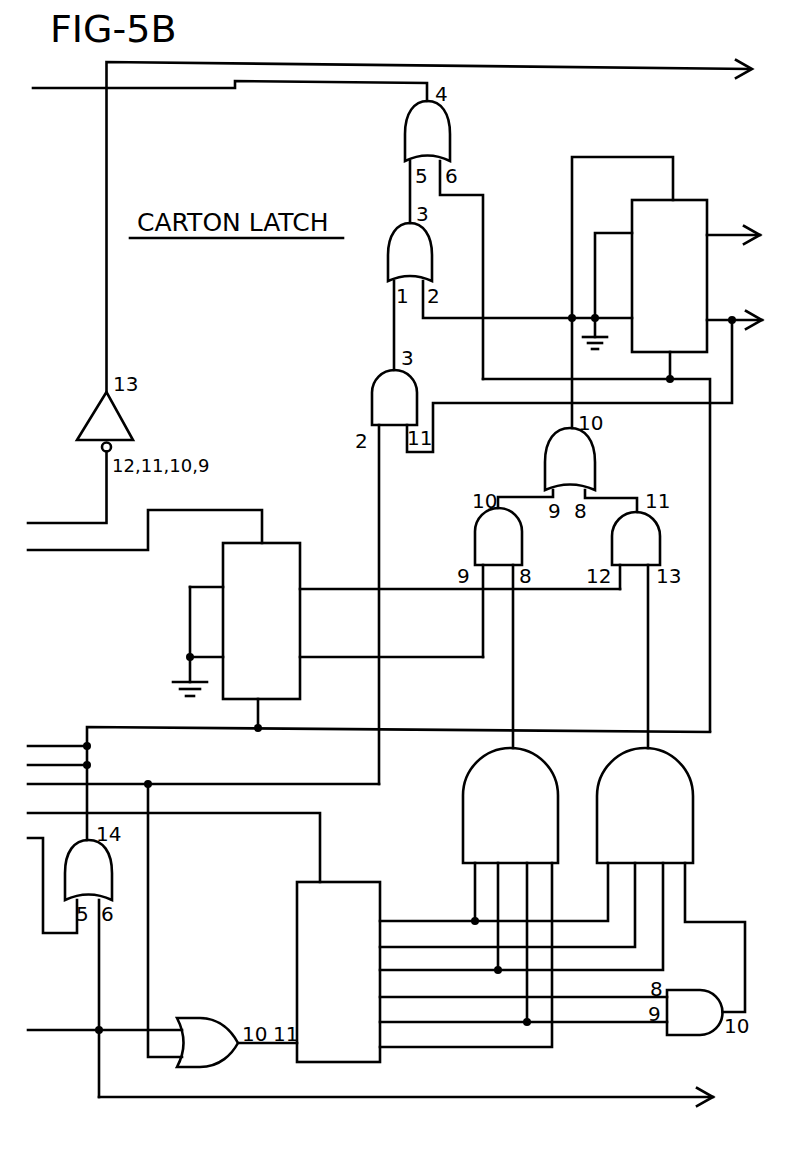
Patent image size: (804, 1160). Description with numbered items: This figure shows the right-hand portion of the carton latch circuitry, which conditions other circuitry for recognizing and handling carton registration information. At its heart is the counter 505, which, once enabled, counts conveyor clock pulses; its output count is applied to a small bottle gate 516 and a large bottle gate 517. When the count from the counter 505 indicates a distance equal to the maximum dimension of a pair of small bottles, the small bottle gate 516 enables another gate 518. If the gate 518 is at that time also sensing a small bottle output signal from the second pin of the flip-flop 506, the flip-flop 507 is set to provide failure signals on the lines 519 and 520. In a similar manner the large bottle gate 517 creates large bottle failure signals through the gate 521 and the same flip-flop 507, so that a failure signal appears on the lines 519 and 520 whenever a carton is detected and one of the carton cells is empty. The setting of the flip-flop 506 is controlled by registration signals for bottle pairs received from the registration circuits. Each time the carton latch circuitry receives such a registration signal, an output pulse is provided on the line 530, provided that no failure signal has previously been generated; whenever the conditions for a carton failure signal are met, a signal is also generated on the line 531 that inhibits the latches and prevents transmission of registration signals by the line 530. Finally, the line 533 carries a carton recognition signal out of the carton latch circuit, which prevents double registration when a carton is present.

The line 530 is at (583, 68).
The line 531 is at (200, 92).
The flip-flop 507 is at (658, 207).
The line 519 is at (727, 242).
The line 520 is at (735, 325).
The flip-flop 506 is at (289, 553).
The gate 518 is at (486, 543).
The gate 521 is at (627, 547).
The small bottle gate 516 is at (480, 778).
The large bottle gate 517 is at (667, 793).
The counter 505 is at (367, 883).
The line 533 is at (493, 1097).